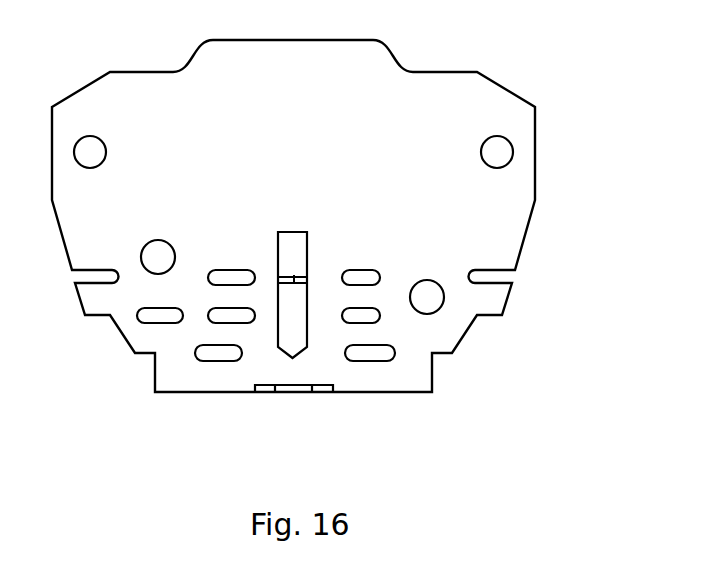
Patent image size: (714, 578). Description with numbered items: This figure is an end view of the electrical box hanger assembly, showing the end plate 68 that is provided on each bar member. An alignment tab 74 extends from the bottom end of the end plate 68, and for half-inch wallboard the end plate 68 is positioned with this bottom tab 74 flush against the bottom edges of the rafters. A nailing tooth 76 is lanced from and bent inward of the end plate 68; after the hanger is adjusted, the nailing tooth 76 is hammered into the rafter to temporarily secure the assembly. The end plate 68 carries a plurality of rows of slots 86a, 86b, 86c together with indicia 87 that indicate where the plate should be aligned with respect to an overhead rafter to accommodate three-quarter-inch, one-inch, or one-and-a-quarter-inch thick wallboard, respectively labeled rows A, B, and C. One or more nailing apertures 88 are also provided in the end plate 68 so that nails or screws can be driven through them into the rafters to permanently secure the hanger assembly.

The end plate 68 is at (507, 90).
The alignment tab 74 is at (294, 393).
The nailing tooth 76 is at (293, 241).
The slots 86a is at (370, 355).
The slots 86b is at (380, 316).
The slots 86c is at (380, 277).
The indicia 87 is at (412, 98).
The nailing apertures 88 is at (497, 152).